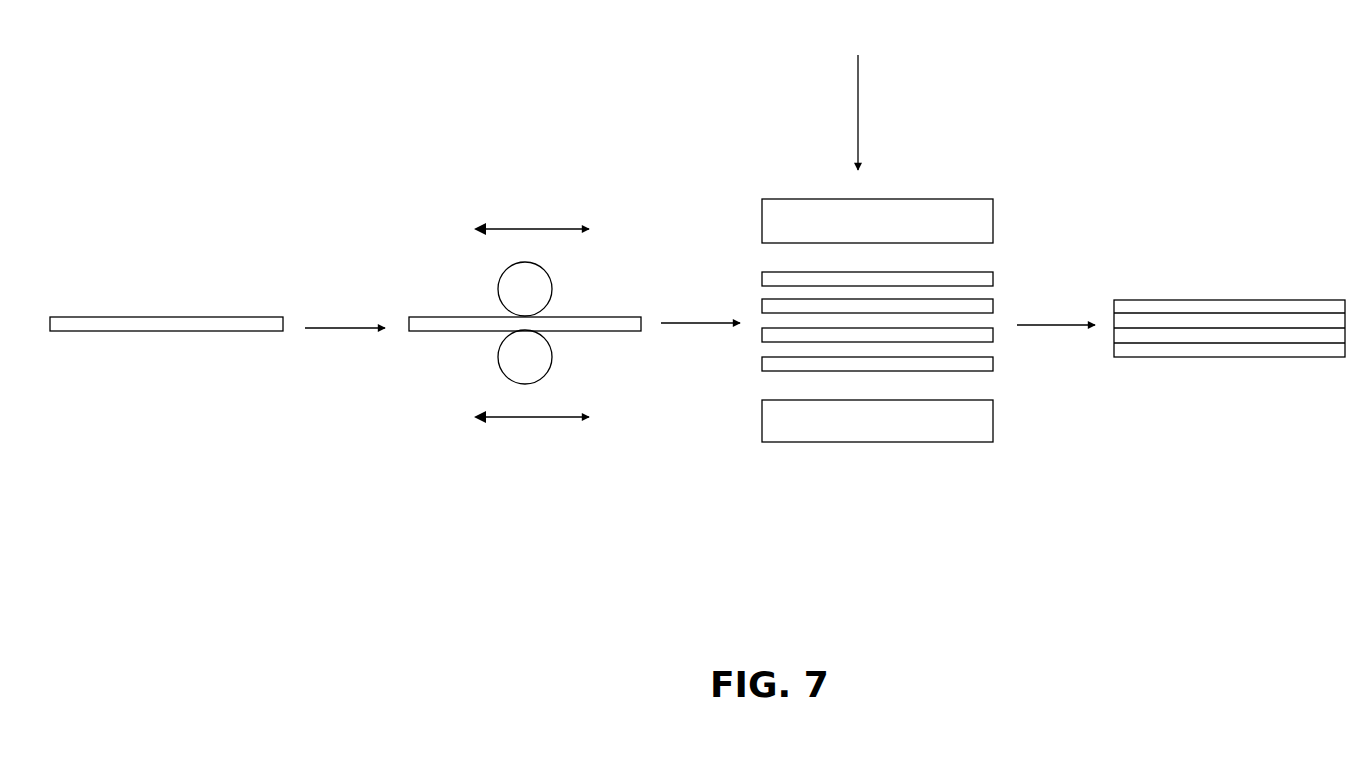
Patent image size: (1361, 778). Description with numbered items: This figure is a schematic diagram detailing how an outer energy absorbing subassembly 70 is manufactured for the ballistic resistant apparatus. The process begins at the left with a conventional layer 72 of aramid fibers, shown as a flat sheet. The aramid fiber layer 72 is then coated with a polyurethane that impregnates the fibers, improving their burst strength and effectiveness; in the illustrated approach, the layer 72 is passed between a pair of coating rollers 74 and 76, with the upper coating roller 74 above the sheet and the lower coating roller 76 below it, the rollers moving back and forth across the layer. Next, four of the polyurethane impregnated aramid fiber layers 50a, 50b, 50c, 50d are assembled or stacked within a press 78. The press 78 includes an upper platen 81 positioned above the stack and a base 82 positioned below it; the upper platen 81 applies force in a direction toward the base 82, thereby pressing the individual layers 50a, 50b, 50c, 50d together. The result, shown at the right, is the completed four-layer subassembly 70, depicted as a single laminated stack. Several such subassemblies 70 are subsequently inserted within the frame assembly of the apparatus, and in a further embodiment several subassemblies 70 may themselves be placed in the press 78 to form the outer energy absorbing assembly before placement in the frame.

The aramid fiber layer 72 is at (195, 322).
The coating roller 74 is at (540, 293).
The coating roller 76 is at (540, 352).
The press 78 is at (982, 142).
The upper platen 81 is at (982, 210).
The base 82 is at (982, 431).
The polyurethane impregnated aramid fiber layer 50a is at (982, 280).
The polyurethane impregnated aramid fiber layer 50b is at (982, 307).
The polyurethane impregnated aramid fiber layer 50c is at (982, 336).
The polyurethane impregnated aramid fiber layer 50d is at (982, 364).
The outer energy absorbing subassembly 70 is at (1307, 282).